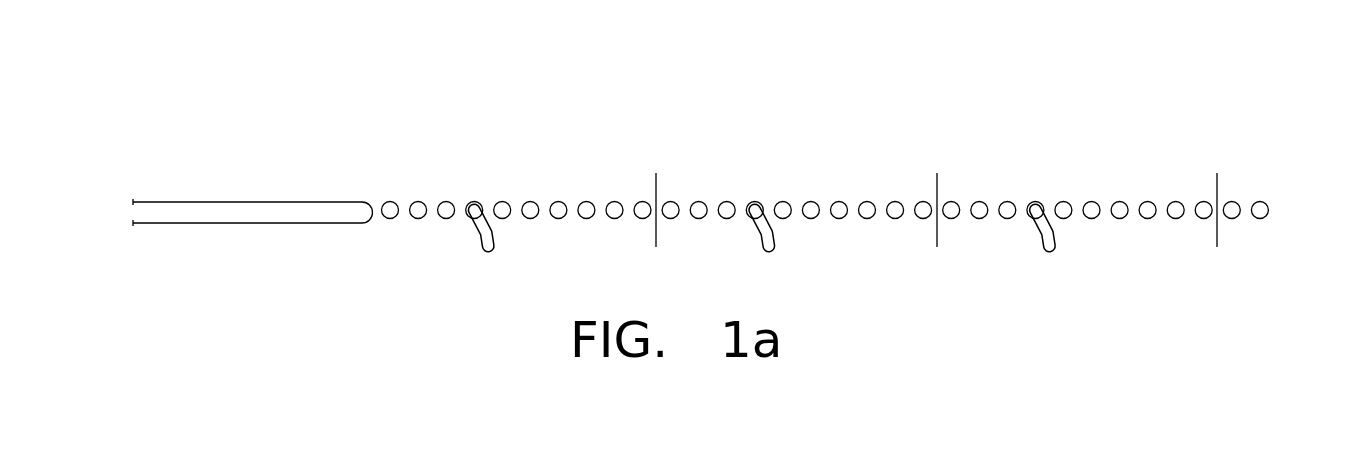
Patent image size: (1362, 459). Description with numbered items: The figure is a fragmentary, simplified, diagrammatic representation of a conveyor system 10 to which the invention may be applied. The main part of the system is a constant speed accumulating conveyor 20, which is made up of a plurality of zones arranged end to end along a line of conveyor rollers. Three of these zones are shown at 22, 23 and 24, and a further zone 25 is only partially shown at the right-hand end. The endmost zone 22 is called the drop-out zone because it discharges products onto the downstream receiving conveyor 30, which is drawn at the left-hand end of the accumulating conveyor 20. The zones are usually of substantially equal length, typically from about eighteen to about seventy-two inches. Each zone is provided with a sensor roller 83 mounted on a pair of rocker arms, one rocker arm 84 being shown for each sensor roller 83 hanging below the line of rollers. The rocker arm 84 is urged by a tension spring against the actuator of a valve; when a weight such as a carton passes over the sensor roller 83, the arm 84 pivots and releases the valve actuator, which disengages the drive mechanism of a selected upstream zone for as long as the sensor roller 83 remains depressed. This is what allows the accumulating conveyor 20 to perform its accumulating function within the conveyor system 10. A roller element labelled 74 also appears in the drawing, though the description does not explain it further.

The conveyor system 10 is at (192, 291).
The constant speed accumulating conveyor 20 is at (1033, 84).
The drop-out zone 22 is at (557, 177).
The zone 23 is at (839, 179).
The zone 24 is at (1117, 177).
The zone 25 is at (1262, 177).
The downstream receiving conveyor 30 is at (292, 194).
The ring 74 is at (390, 201).
The sensor roller 83 is at (473, 201).
The rocker arm 84 is at (495, 242).